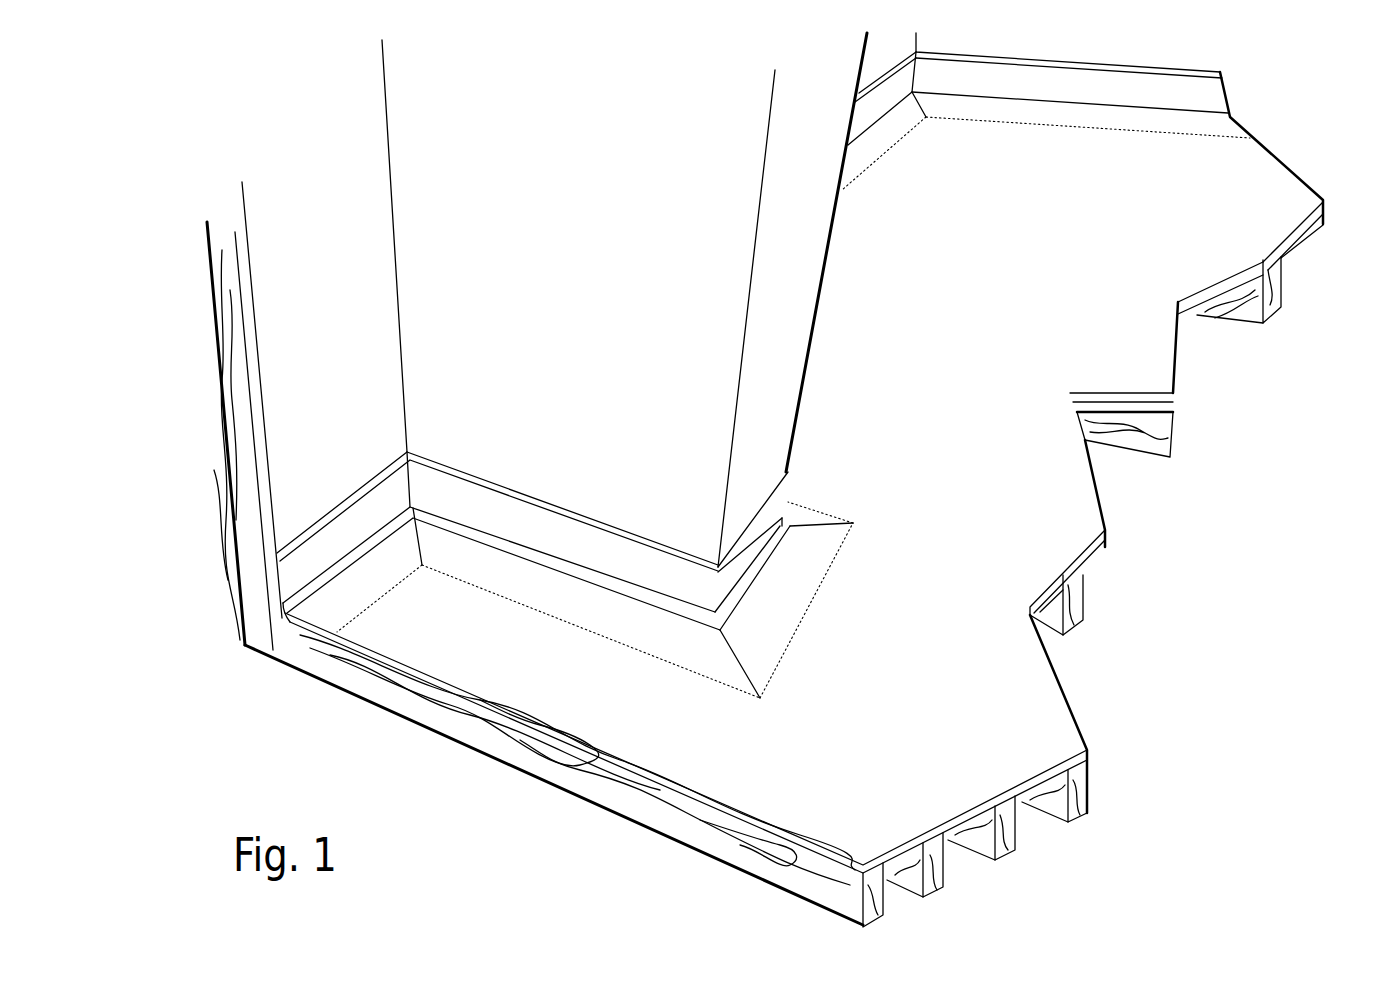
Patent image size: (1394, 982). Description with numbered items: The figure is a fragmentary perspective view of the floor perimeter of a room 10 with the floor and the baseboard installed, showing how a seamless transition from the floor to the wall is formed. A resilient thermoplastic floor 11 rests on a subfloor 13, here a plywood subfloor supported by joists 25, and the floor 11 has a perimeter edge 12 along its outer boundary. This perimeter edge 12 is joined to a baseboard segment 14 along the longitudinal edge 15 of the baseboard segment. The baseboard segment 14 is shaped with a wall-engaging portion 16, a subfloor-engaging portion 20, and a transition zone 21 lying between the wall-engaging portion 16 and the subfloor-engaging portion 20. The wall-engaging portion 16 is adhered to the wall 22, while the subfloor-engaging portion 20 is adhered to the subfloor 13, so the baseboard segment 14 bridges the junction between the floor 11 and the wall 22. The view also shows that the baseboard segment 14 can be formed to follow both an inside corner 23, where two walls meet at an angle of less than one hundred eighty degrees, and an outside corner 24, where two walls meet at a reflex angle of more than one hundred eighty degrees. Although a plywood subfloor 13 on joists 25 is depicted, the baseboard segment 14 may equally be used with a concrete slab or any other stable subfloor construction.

The floor perimeter of a room 10 is at (1218, 490).
The resilient thermoplastic floor 11 is at (990, 728).
The perimeter edge 12 is at (1077, 622).
The subfloor 13 is at (1107, 548).
The baseboard segment 14 is at (818, 538).
The longitudinal edge 15 is at (790, 652).
The wall-engaging portion 16 is at (293, 572).
The subfloor-engaging portion 20 is at (337, 608).
The transition zone 21 is at (282, 618).
The wall 22 is at (655, 520).
The inside corner 23 is at (400, 330).
The outside corner 24 is at (728, 452).
The joists 25 is at (1008, 853).